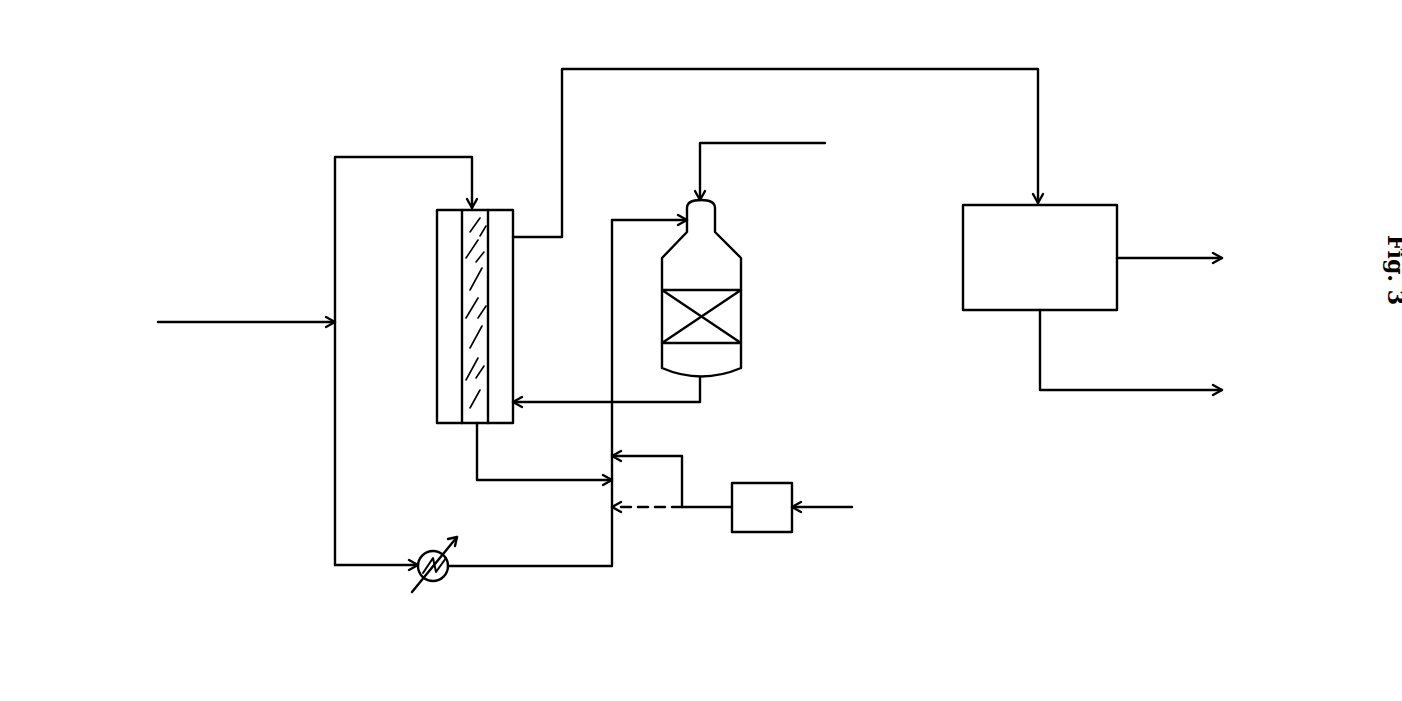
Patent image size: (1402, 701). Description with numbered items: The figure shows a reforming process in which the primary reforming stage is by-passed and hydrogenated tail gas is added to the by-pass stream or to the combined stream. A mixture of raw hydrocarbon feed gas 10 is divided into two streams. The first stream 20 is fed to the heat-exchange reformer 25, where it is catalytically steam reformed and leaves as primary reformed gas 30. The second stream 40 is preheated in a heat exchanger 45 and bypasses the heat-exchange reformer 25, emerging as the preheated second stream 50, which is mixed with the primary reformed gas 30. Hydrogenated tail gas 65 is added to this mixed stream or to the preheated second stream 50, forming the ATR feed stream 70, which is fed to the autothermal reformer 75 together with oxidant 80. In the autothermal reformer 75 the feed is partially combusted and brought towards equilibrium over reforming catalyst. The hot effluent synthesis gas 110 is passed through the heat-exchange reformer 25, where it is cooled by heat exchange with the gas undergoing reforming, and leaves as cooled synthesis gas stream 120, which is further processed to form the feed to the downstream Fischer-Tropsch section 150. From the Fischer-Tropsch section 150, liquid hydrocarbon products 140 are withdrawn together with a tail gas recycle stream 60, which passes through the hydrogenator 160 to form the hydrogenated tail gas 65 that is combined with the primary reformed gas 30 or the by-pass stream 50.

The raw hydrocarbon feed gas 10 is at (246, 334).
The first stream 20 is at (406, 361).
The heat-exchange reformer 25 is at (513, 318).
The primary reformed gas 30 is at (544, 464).
The second stream 40 is at (376, 577).
The heat exchanger 45 is at (422, 549).
The preheated second stream 50 is at (530, 580).
The tail gas recycle stream 60 is at (1009, 394).
The hydrogenated tail gas 65 is at (672, 481).
The ATR feed stream 70 is at (649, 390).
The autothermal reformer 75 is at (742, 300).
The oxidant 80 is at (760, 171).
The hot effluent synthesis gas 110 is at (606, 403).
The cooled synthesis gas stream 120 is at (778, 153).
The liquid hydrocarbon products 140 is at (1131, 364).
The Fischer-Tropsch section 150 is at (1118, 216).
The hydrogenator 160 is at (757, 540).